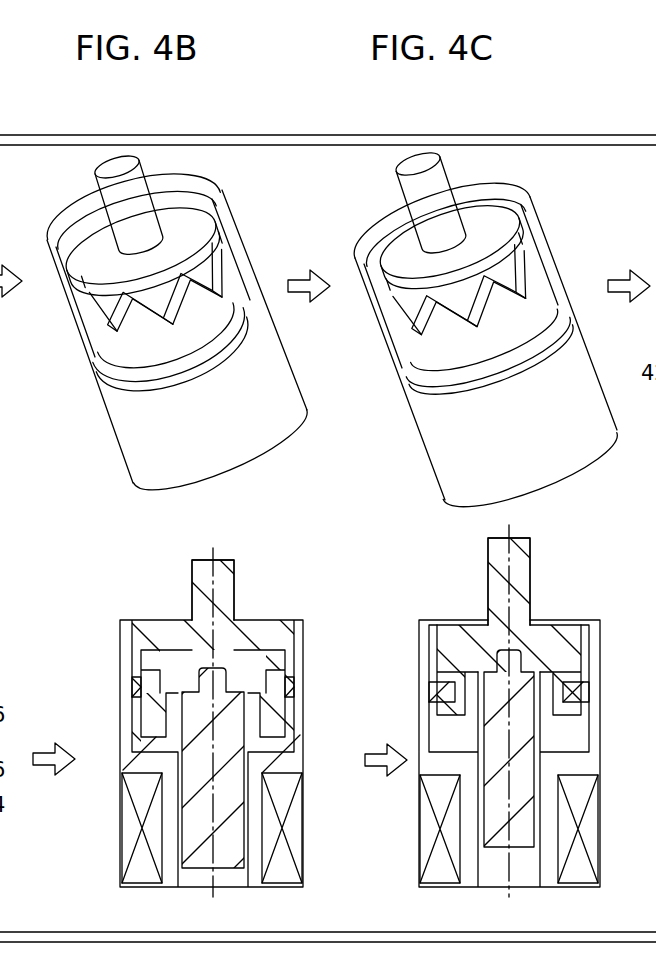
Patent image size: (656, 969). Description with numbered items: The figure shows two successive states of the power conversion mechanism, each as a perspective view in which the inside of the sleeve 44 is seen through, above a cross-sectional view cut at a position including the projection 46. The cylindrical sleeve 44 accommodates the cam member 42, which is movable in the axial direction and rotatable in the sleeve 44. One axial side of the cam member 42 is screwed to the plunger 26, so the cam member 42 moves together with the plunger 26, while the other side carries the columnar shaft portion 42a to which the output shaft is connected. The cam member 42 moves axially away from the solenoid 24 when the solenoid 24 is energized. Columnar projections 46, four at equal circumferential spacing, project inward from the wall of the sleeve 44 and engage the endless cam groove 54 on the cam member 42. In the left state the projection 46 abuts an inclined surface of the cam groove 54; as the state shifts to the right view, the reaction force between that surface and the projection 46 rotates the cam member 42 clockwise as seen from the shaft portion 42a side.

In FIG. 4B, the solenoid 24 is at (290, 835).
In FIG. 4C, the solenoid 24 is at (588, 838).
In FIG. 4B, the plunger 26 is at (230, 768).
In FIG. 4C, the plunger 26 is at (520, 775).
In FIG. 4B, the cam member 42 is at (85, 313).
In FIG. 4C, the cam member 42 is at (388, 318).
In FIG. 4B, the shaft portion 42a is at (128, 215).
In FIG. 4C, the shaft portion 42a is at (420, 207).
In FIG. 4B, the sleeve 44 is at (230, 235).
In FIG. 4C, the sleeve 44 is at (543, 263).
In FIG. 4B, the projection 46 is at (150, 337).
In FIG. 4C, the projection 46 is at (450, 357).
In FIG. 4B, the cam groove 54 is at (135, 677).
In FIG. 4C, the cam groove 54 is at (428, 683).